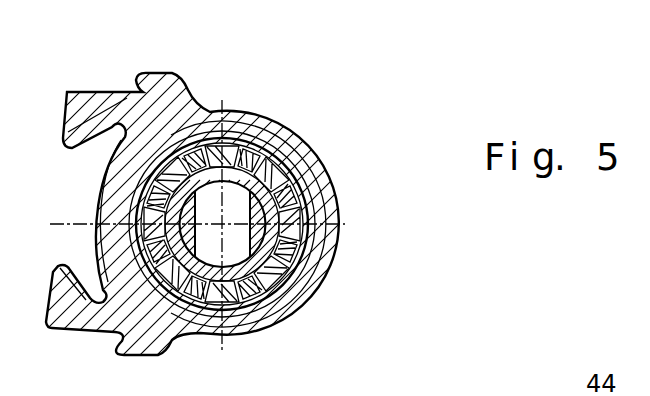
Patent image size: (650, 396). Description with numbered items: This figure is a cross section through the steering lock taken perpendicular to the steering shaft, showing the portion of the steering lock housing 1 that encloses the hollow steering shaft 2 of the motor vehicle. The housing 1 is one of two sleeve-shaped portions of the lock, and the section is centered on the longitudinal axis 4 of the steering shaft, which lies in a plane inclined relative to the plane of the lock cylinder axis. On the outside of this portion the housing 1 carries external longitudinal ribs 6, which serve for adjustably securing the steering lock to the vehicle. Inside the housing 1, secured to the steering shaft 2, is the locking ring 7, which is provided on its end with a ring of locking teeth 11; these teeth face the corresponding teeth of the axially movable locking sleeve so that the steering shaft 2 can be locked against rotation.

The housing 1 is at (266, 130).
The steering shaft 2 is at (268, 170).
The longitudinal axis of the steering shaft 4 is at (222, 226).
The external longitudinal ribs 6 is at (93, 103).
The locking ring 7 is at (300, 214).
The locking teeth 11 is at (305, 274).